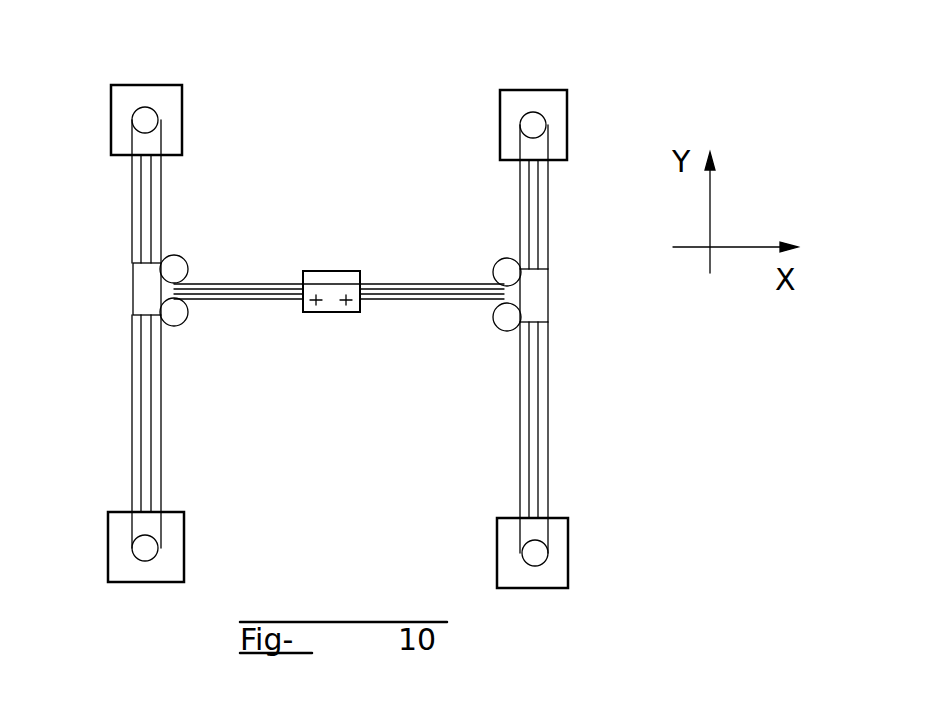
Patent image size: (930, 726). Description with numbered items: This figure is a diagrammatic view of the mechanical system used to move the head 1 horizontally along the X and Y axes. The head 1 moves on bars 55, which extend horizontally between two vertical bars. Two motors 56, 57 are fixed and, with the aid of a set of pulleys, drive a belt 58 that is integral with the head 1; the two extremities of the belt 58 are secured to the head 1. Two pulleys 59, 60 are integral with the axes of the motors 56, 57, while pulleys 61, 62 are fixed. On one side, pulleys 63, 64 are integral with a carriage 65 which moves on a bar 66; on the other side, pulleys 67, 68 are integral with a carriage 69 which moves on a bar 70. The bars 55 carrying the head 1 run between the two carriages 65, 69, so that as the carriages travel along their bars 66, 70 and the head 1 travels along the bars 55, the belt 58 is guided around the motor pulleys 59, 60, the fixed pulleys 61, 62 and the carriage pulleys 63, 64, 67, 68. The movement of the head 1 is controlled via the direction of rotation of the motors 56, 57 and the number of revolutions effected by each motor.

The head 1 is at (312, 277).
The bars 55 is at (397, 298).
The motor 56 is at (163, 92).
The motor 57 is at (547, 97).
The belt 58 is at (162, 190).
The pulley 59 is at (160, 118).
The pulley 60 is at (550, 123).
The pulley 61 is at (142, 548).
The pulley 62 is at (523, 548).
The pulley 63 is at (181, 324).
The pulley 64 is at (187, 260).
The carriage 65 is at (146, 290).
The bar 66 is at (146, 370).
The pulley 67 is at (502, 258).
The pulley 68 is at (498, 329).
The carriage 69 is at (538, 297).
The bar 70 is at (538, 482).